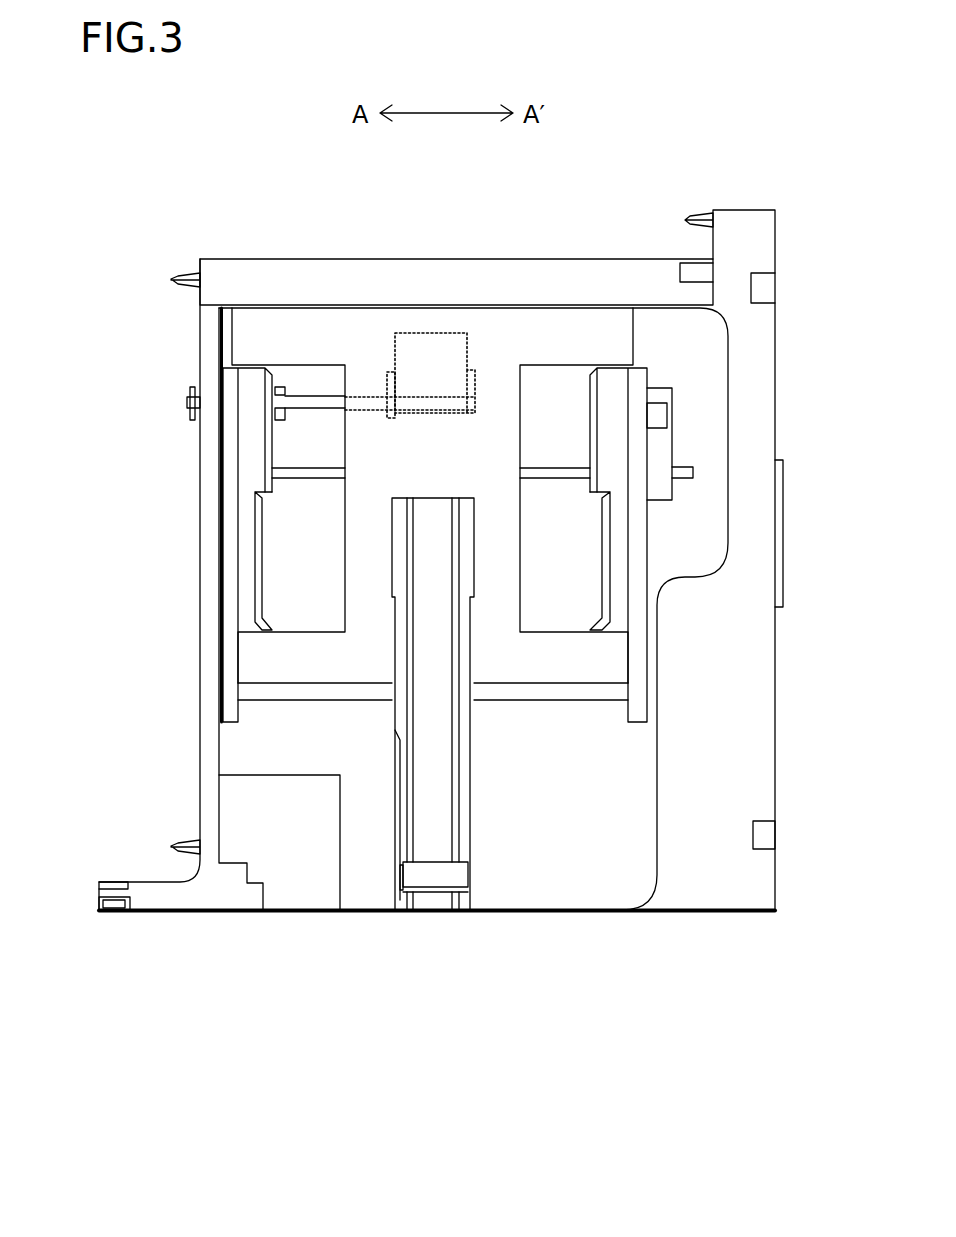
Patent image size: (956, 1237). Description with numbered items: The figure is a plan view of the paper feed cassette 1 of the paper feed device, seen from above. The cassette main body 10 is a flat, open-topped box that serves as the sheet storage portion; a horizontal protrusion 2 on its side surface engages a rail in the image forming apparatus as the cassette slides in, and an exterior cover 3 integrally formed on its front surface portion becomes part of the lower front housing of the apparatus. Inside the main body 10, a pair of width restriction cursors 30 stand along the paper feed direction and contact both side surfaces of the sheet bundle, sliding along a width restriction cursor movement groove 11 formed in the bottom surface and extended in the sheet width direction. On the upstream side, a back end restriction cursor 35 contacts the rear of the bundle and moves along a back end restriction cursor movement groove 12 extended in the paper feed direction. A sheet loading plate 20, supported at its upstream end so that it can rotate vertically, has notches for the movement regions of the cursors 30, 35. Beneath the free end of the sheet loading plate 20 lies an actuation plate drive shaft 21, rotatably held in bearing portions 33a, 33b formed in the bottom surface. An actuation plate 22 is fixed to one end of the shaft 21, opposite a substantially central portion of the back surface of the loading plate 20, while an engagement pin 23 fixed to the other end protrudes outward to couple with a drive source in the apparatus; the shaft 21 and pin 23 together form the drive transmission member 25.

The paper feed cassette 1 is at (717, 161).
The horizontal protrusion 2 is at (140, 880).
The exterior cover 3 is at (795, 487).
The cassette main body 10 is at (295, 937).
The width restriction cursor movement groove 11 is at (322, 480).
The back end restriction cursor movement groove 12 is at (462, 802).
The sheet loading plate 20 is at (433, 318).
The actuation plate drive shaft 21 is at (317, 410).
The actuation plate 22 is at (467, 365).
The engagement pin 23 is at (183, 402).
The drive transmission member 25 is at (118, 405).
The width restriction cursors 30 is at (252, 393).
The bearing portion 33a is at (282, 388).
The bearing portion 33b is at (378, 378).
The back end restriction cursor 35 is at (432, 880).